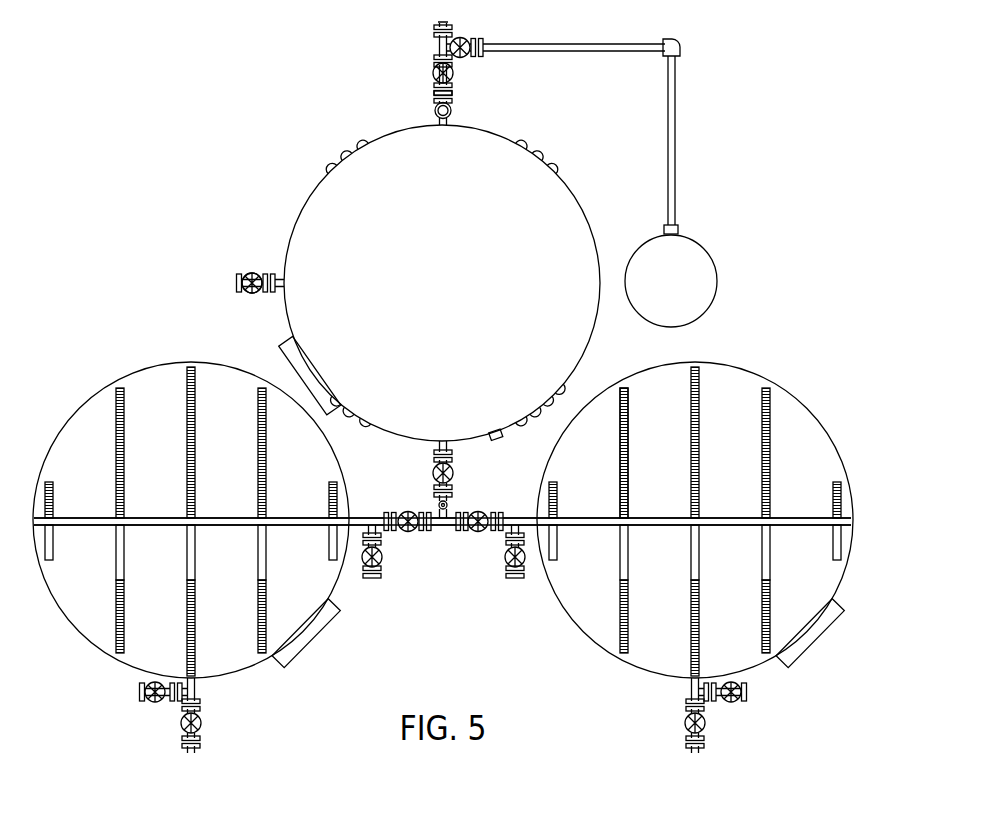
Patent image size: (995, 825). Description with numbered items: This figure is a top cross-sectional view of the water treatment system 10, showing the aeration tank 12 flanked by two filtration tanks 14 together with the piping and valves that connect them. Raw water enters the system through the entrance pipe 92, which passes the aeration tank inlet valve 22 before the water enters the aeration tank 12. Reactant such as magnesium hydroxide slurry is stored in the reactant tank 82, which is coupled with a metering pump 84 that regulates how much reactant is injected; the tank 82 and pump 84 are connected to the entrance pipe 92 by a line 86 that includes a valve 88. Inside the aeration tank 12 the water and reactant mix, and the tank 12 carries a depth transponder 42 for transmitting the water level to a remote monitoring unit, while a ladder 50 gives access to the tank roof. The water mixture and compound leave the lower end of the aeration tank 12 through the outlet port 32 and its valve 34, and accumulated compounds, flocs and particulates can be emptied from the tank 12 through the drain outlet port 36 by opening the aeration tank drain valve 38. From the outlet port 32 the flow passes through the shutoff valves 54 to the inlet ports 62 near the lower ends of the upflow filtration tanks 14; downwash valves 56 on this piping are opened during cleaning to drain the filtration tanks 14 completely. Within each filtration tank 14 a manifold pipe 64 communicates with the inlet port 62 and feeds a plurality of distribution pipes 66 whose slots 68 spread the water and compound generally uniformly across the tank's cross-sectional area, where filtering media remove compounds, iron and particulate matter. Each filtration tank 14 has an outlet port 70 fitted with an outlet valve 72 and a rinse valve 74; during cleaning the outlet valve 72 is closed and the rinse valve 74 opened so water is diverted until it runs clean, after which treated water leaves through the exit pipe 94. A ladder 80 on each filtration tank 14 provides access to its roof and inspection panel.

The water treatment system 10 is at (820, 167).
The aeration tank 12 is at (584, 206).
The filtration tank 14 is at (102, 384).
The aeration tank inlet valve 22 is at (433, 73).
The outlet port 32 is at (448, 445).
The valve 34 is at (434, 473).
The drain outlet port 36 is at (282, 281).
The aeration tank drain valve 38 is at (254, 293).
The depth transponder 42 is at (503, 441).
The ladder 50 is at (281, 351).
The shutoff valve 54 is at (409, 510).
The downwash valve 56 is at (382, 558).
The inlet port 62 is at (352, 518).
The manifold pipe 64 is at (598, 518).
The distribution pipe 66 is at (629, 480).
The slot 68 is at (629, 437).
The outlet port 70 is at (194, 681).
The outlet valve 72 is at (201, 723).
The rinse valve 74 is at (155, 702).
The ladder 80 is at (318, 640).
The reactant tank 82 is at (717, 279).
The metering pump 84 is at (678, 230).
The line 86 is at (676, 148).
The valve 88 is at (468, 56).
The entrance pipe 92 is at (434, 27).
The exit pipe 94 is at (196, 750).